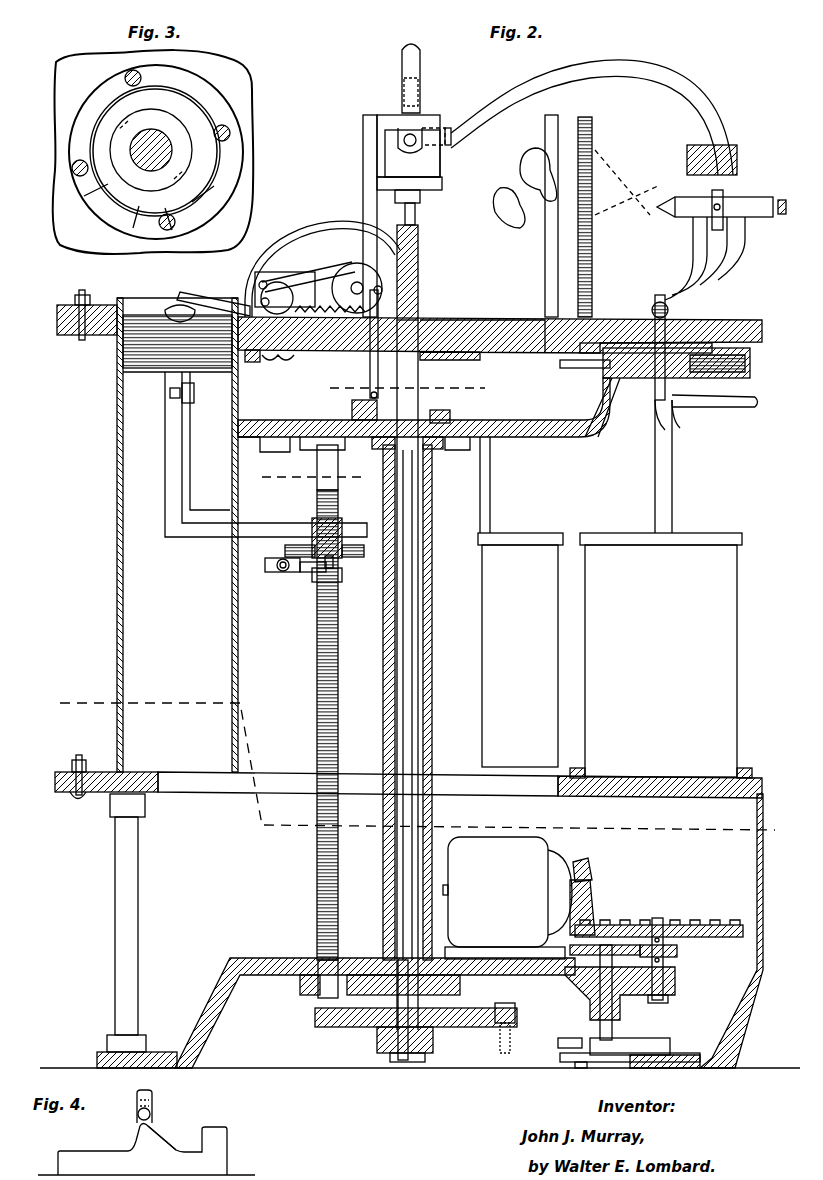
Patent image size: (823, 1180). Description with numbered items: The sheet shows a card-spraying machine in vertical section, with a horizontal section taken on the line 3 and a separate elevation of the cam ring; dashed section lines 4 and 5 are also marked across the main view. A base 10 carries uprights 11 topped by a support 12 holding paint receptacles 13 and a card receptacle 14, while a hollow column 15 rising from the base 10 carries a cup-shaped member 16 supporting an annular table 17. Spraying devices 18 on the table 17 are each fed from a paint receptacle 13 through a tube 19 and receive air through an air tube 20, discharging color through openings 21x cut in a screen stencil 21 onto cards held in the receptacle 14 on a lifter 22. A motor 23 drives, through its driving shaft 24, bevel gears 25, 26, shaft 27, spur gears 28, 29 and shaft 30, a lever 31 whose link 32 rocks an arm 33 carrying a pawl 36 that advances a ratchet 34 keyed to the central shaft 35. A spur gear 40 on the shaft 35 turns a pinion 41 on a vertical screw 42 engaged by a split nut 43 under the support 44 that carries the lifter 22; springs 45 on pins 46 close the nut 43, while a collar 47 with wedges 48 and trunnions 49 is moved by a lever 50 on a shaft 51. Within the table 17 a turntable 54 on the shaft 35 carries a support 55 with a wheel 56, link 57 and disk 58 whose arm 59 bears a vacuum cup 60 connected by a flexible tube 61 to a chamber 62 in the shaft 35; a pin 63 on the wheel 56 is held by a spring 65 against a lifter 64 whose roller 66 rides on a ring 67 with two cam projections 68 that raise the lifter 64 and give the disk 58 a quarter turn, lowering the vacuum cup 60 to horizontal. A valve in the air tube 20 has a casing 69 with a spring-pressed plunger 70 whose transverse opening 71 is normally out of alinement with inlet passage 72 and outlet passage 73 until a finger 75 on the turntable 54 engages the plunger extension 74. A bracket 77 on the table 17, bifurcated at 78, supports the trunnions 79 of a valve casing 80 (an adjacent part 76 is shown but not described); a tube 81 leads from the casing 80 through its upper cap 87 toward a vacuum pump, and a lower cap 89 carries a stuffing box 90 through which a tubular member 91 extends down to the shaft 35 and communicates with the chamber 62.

In FIG. 2, the section line 3 is at (400, 388).
In FIG. 2, the section line 4- 4 is at (315, 475).
In FIG. 2, the section line 5- 5 is at (415, 766).
In FIG. 2, the base 10 is at (232, 955).
In FIG. 2, the uprights 11 is at (132, 887).
In FIG. 2, the support 12 is at (96, 796).
In FIG. 2, the paint receptacles 13 is at (524, 533).
In FIG. 2, the card receptacle 14 is at (117, 598).
In FIG. 2, the hollow column 15 is at (432, 662).
In FIG. 3, the cup-shaped member 16 is at (58, 180).
In FIG. 2, the cup-shaped member 16 is at (508, 421).
In FIG. 2, the annular table 17 is at (762, 331).
In FIG. 2, the spraying devices 18 is at (752, 200).
In FIG. 2, the tube 19 is at (693, 242).
In FIG. 2, the air tube 20 is at (742, 244).
In FIG. 2, the screen stencil 21 is at (504, 110).
In FIG. 2, the openings 21x is at (522, 226).
In FIG. 2, the lifter 22 is at (140, 372).
In FIG. 2, the motor 23 is at (512, 840).
In FIG. 2, the driving shaft 24 is at (595, 895).
In FIG. 2, the bevel gear 25 is at (582, 866).
In FIG. 2, the bevel gear 26 is at (688, 922).
In FIG. 2, the shaft 27 is at (663, 978).
In FIG. 2, the spur gear 28 is at (678, 950).
In FIG. 2, the spur gear 29 is at (611, 993).
In FIG. 2, the shaft 30 is at (598, 996).
In FIG. 2, the lever 31 is at (640, 1042).
In FIG. 2, the link 32 is at (630, 1063).
In FIG. 2, the arm 33 is at (565, 1040).
In FIG. 2, the ratchet 34 is at (355, 1028).
In FIG. 3, the revoluble shaft 35 is at (168, 140).
In FIG. 2, the revoluble shaft 35 is at (418, 720).
In FIG. 2, the pawl 36 is at (514, 1010).
In FIG. 2, the spur gear 40 is at (460, 988).
In FIG. 2, the pinion 41 is at (300, 984).
In FIG. 2, the vertical screw 42 is at (317, 843).
In FIG. 2, the split nut 43 is at (342, 572).
In FIG. 2, the support 44 is at (205, 527).
In FIG. 2, the springs 45 is at (300, 542).
In FIG. 2, the pins 46 is at (285, 548).
In FIG. 2, the collar 47 is at (334, 575).
In FIG. 2, the wedges 48 is at (305, 575).
In FIG. 2, the trunnions 49 is at (318, 582).
In FIG. 2, the lever 50 is at (282, 575).
In FIG. 2, the shaft 51 is at (278, 568).
In FIG. 2, the turntable 54 is at (480, 322).
In FIG. 2, the support 55 is at (268, 282).
In FIG. 2, the wheel 56 is at (352, 264).
In FIG. 2, the link 57 is at (302, 270).
In FIG. 2, the disk 58 is at (293, 298).
In FIG. 2, the arm 59 is at (208, 292).
In FIG. 2, the vacuum cup 60 is at (172, 306).
In FIG. 2, the flexible tube 61 is at (308, 228).
In FIG. 2, the chamber 62 is at (418, 260).
In FIG. 2, the pin 63 is at (382, 290).
In FIG. 2, the lifter 64 is at (370, 374).
In FIG. 4, the lifter 64 is at (152, 1096).
In FIG. 2, the spring 65 is at (320, 352).
In FIG. 4, the roller 66 is at (152, 1112).
In FIG. 3, the ring 67 is at (82, 196).
In FIG. 2, the ring 67 is at (450, 413).
In FIG. 4, the ring 67 is at (87, 1153).
In FIG. 3, the cam projections 68 is at (210, 204).
In FIG. 2, the cam projections 68 is at (362, 405).
In FIG. 4, the cam projections 68 is at (162, 1136).
In FIG. 2, the valve casing 69 is at (622, 395).
In FIG. 2, the plunger 70 is at (700, 378).
In FIG. 2, the transverse opening 71 is at (640, 378).
In FIG. 2, the inlet passage 72 is at (658, 418).
In FIG. 2, the outlet passage 73 is at (652, 305).
In FIG. 2, the extension 74 is at (578, 368).
In FIG. 2, the finger 75 is at (255, 365).
In FIG. 2, the arm 76 is at (668, 200).
In FIG. 2, the bracket 77 is at (692, 86).
In FIG. 2, the bifurcated end 78 is at (447, 130).
In FIG. 2, the trunnions 79 is at (400, 143).
In FIG. 2, the valve casing 80 is at (432, 162).
In FIG. 2, the tube 81 is at (416, 80).
In FIG. 2, the cap 87 is at (384, 118).
In FIG. 2, the cap 89 is at (377, 183).
In FIG. 2, the stuffing box 90 is at (420, 197).
In FIG. 2, the tubular member 91 is at (415, 215).